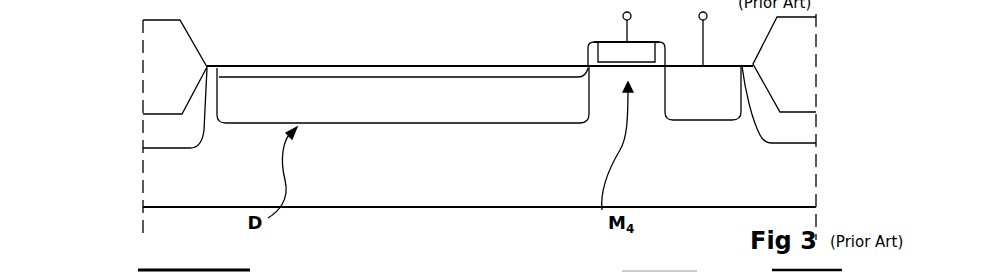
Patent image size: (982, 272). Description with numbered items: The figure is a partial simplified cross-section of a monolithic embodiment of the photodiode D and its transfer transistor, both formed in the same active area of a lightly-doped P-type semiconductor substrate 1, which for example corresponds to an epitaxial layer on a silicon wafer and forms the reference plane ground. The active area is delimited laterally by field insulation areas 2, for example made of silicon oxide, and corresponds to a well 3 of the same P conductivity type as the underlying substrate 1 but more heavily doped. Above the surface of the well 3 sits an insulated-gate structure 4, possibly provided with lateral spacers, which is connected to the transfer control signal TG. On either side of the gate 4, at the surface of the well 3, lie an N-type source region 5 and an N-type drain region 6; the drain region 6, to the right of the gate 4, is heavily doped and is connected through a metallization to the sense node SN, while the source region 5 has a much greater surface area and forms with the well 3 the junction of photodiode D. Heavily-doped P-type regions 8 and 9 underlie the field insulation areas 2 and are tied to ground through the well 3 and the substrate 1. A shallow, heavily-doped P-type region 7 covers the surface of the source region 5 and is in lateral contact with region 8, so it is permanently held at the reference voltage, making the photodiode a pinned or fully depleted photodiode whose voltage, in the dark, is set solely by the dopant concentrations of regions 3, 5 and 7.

The semiconductor substrate 1 is at (167, 230).
The field insulation areas 2 is at (161, 41).
The well 3 is at (168, 185).
The insulated-gate structure 4 is at (580, 36).
The source region 5 is at (237, 105).
The drain region 6 is at (725, 77).
The shallow P-type region 7 is at (218, 69).
The heavily-doped P-type region 8 is at (166, 134).
The heavily-doped P-type region 9 is at (793, 137).